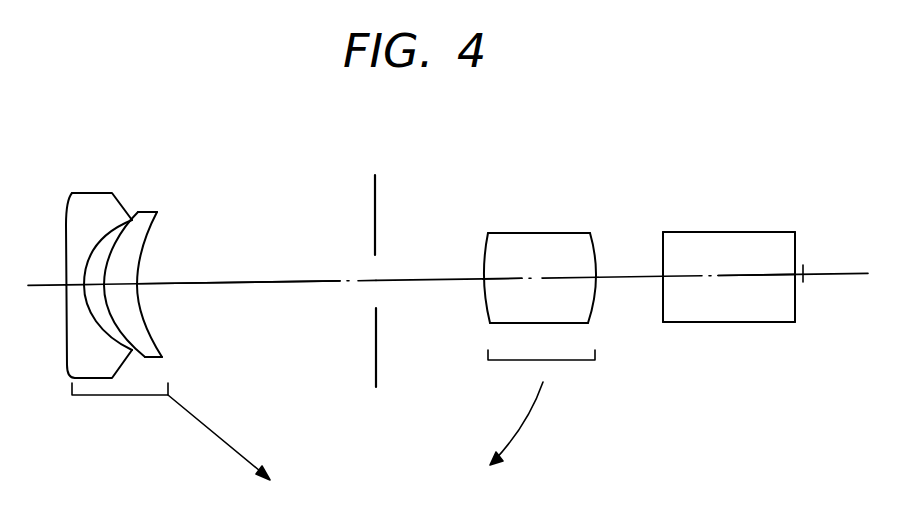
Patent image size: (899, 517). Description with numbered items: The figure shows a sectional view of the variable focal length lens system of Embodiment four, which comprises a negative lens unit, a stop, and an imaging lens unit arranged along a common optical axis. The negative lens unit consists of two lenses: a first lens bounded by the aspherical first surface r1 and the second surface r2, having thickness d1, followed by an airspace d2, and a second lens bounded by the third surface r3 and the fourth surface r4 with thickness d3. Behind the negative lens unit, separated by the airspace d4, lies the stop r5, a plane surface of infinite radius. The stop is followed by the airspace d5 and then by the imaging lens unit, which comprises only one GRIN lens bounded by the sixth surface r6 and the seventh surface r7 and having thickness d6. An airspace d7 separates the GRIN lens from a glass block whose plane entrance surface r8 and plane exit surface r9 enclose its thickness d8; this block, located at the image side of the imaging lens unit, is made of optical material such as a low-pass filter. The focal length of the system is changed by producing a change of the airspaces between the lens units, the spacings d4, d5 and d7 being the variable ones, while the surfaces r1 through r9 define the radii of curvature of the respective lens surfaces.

The radius of curvature of first lens surface r1 is at (65, 221).
The radius of curvature of second lens surface r2 is at (103, 237).
The radius of curvature of third lens surface r3 is at (141, 232).
The radius of curvature of fourth lens surface r4 is at (157, 227).
The stop surface r5 is at (373, 198).
The radius of curvature of sixth lens surface r6 is at (488, 243).
The radius of curvature of seventh lens surface r7 is at (592, 247).
The radius of curvature of eighth surface r8 is at (663, 245).
The radius of curvature of ninth surface r9 is at (793, 242).
The thickness of first lens d1 is at (77, 290).
The airspace between first and second lenses d2 is at (93, 285).
The thickness of second lens d3 is at (128, 292).
The airspace between negative lens unit and stop d4 is at (252, 283).
The airspace between stop and imaging lens unit d5 is at (420, 283).
The thickness of GRIN lens d6 is at (547, 283).
The airspace between imaging lens unit and glass block d7 is at (630, 280).
The thickness of glass block d8 is at (733, 277).